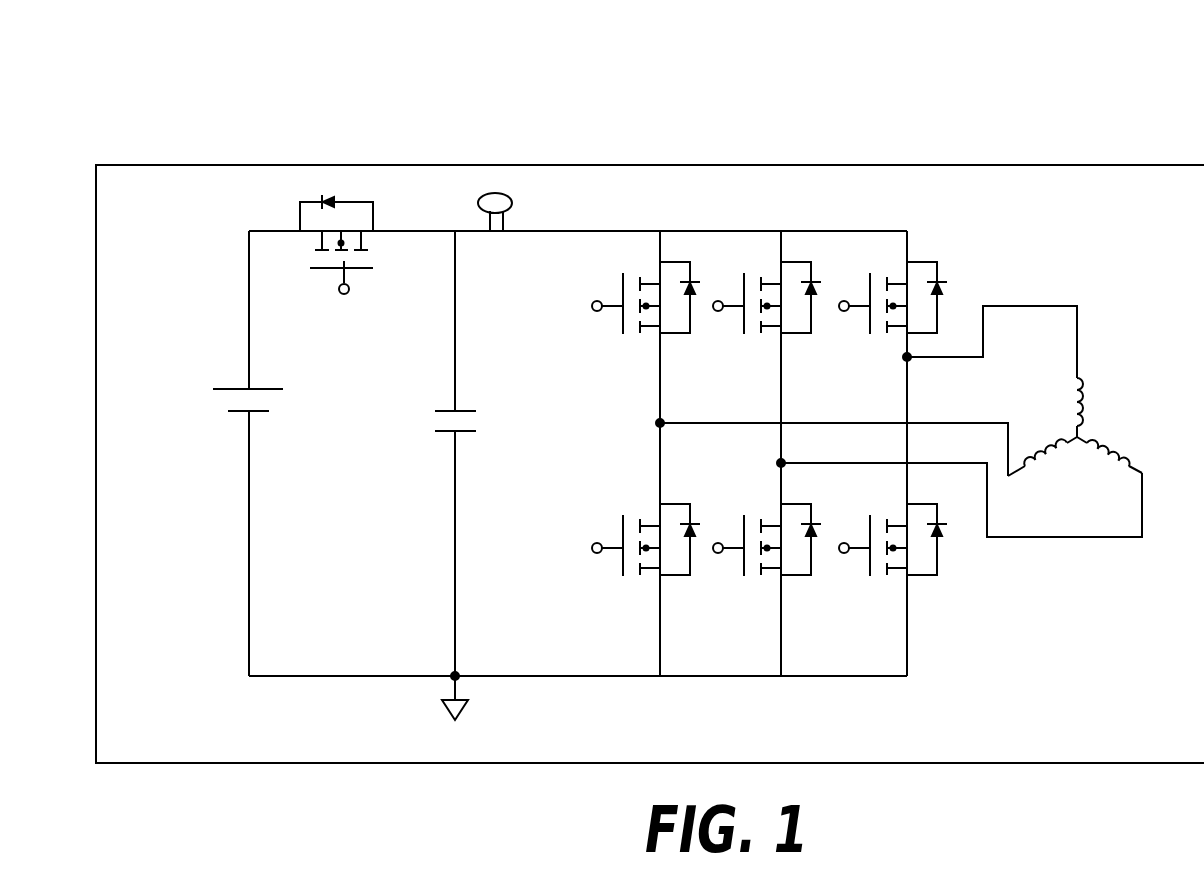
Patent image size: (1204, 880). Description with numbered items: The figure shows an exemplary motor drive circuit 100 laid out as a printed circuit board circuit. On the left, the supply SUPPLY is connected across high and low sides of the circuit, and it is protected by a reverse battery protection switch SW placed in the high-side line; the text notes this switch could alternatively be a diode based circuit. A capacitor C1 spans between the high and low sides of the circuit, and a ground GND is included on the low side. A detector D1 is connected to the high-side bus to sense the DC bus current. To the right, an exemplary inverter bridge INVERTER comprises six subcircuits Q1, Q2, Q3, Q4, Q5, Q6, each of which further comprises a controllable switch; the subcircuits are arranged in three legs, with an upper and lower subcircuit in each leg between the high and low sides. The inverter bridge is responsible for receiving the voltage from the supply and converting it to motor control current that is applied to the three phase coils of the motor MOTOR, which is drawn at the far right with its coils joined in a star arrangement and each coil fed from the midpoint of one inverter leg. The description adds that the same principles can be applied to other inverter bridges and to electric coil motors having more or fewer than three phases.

The motor drive system 100 is at (419, 108).
The supply SUPPLY is at (213, 453).
The capacitor C1 is at (430, 453).
The ground GND is at (425, 696).
The reverse battery protection switch SW is at (334, 259).
The detector D1 is at (511, 207).
The inverter bridge INVERTER is at (769, 433).
The subcircuit Q1 is at (646, 284).
The subcircuit Q2 is at (646, 522).
The subcircuit Q3 is at (768, 284).
The subcircuit Q4 is at (767, 522).
The subcircuit Q5 is at (893, 284).
The subcircuit Q6 is at (893, 522).
The motor MOTOR is at (905, 391).